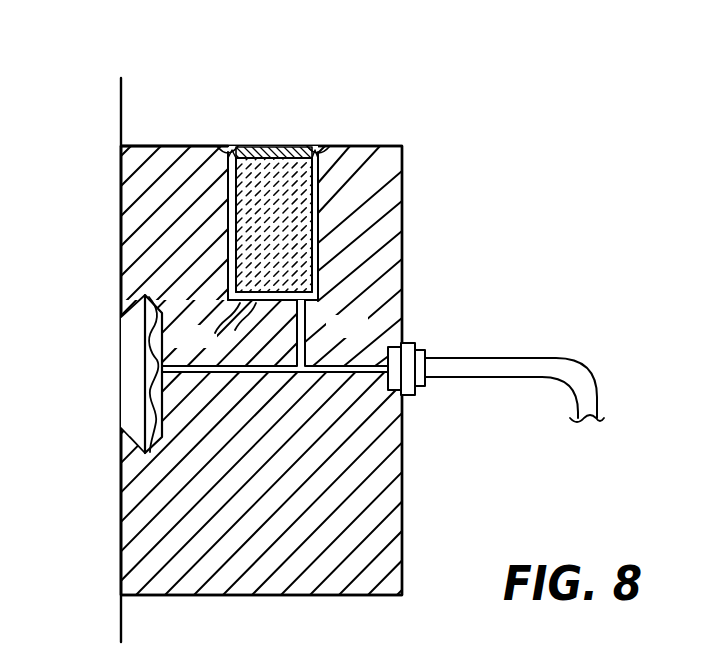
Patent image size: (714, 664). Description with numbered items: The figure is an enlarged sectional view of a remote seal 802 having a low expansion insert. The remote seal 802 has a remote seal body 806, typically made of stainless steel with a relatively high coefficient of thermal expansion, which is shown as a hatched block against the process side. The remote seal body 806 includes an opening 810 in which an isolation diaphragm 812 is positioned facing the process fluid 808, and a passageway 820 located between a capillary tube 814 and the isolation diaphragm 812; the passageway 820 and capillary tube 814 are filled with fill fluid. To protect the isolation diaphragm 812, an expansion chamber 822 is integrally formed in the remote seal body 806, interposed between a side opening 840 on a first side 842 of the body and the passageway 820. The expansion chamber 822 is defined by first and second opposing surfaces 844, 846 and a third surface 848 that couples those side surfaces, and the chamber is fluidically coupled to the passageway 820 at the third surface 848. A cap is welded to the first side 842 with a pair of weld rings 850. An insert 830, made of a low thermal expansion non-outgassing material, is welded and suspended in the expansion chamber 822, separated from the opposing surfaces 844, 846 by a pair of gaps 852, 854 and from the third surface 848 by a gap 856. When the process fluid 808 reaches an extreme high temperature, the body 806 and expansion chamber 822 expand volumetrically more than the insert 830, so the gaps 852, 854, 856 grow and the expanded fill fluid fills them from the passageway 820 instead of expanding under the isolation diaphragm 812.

The remote seal 802 is at (357, 137).
The remote seal body 806 is at (384, 481).
The process fluid 808 is at (88, 349).
The opening 810 is at (122, 450).
The isolation diaphragm 812 is at (150, 392).
The capillary tube 814 is at (509, 358).
The passageway 820 is at (397, 336).
The expansion chamber 822 is at (320, 261).
The insert 830 is at (291, 192).
The side opening 840 is at (263, 145).
The first side 842 is at (186, 146).
The first opposing surface 844 is at (319, 213).
The second opposing surface 846 is at (227, 217).
The third surface 848 is at (306, 301).
The weld rings 850 is at (228, 146).
The gap 852 is at (228, 253).
The gap 854 is at (316, 240).
The gap 856 is at (214, 327).